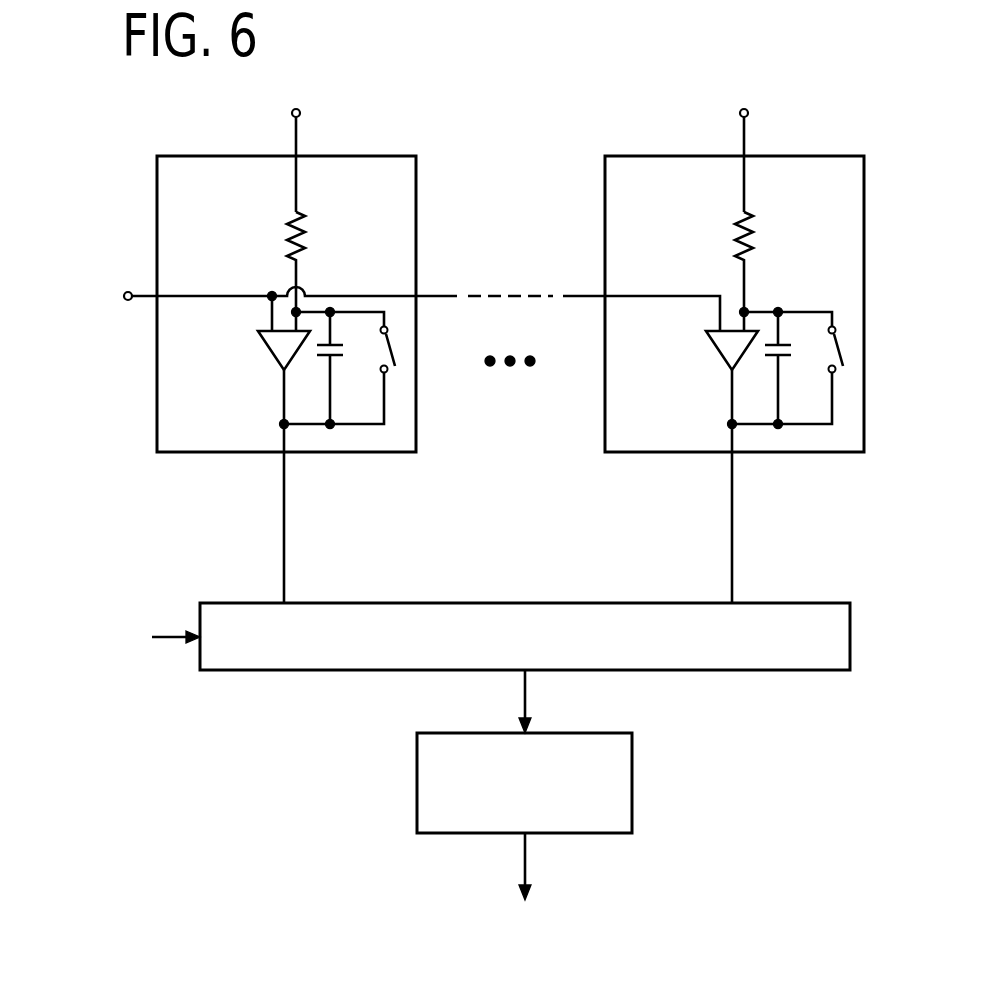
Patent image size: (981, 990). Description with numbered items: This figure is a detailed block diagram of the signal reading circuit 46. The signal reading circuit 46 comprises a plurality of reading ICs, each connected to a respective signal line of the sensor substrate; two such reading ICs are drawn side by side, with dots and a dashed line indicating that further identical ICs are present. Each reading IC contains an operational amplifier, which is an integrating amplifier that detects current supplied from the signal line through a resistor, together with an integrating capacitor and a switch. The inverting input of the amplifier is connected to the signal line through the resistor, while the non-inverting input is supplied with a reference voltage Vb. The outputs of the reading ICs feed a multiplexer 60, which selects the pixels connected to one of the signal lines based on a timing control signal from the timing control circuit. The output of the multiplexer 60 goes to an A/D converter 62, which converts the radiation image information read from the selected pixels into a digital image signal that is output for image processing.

The signal reading circuit 46 is at (922, 81).
The multiplexer 60 is at (782, 602).
The A/D converter 62 is at (609, 731).